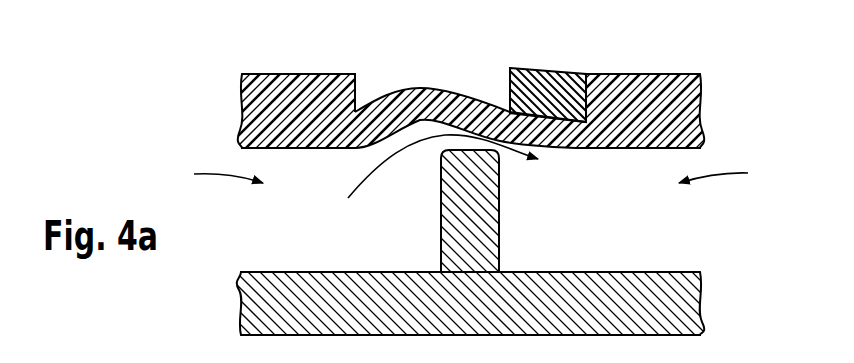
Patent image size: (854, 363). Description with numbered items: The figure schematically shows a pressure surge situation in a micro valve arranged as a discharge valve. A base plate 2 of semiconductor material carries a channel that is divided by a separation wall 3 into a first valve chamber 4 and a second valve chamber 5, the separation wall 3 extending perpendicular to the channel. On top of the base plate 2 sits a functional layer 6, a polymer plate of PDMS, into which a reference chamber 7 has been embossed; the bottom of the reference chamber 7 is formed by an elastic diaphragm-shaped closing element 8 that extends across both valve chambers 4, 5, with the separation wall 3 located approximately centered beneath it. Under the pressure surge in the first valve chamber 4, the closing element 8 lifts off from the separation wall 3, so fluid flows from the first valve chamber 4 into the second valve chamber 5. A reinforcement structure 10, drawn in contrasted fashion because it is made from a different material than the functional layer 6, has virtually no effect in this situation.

The base plate 2 is at (630, 297).
The separation wall 3 is at (476, 232).
The first valve chamber 4 is at (217, 174).
The second valve chamber 5 is at (723, 175).
The functional layer 6 is at (657, 108).
The reference chamber 7 is at (362, 92).
The closing element 8 is at (442, 102).
The reinforcement structure 10 is at (556, 95).